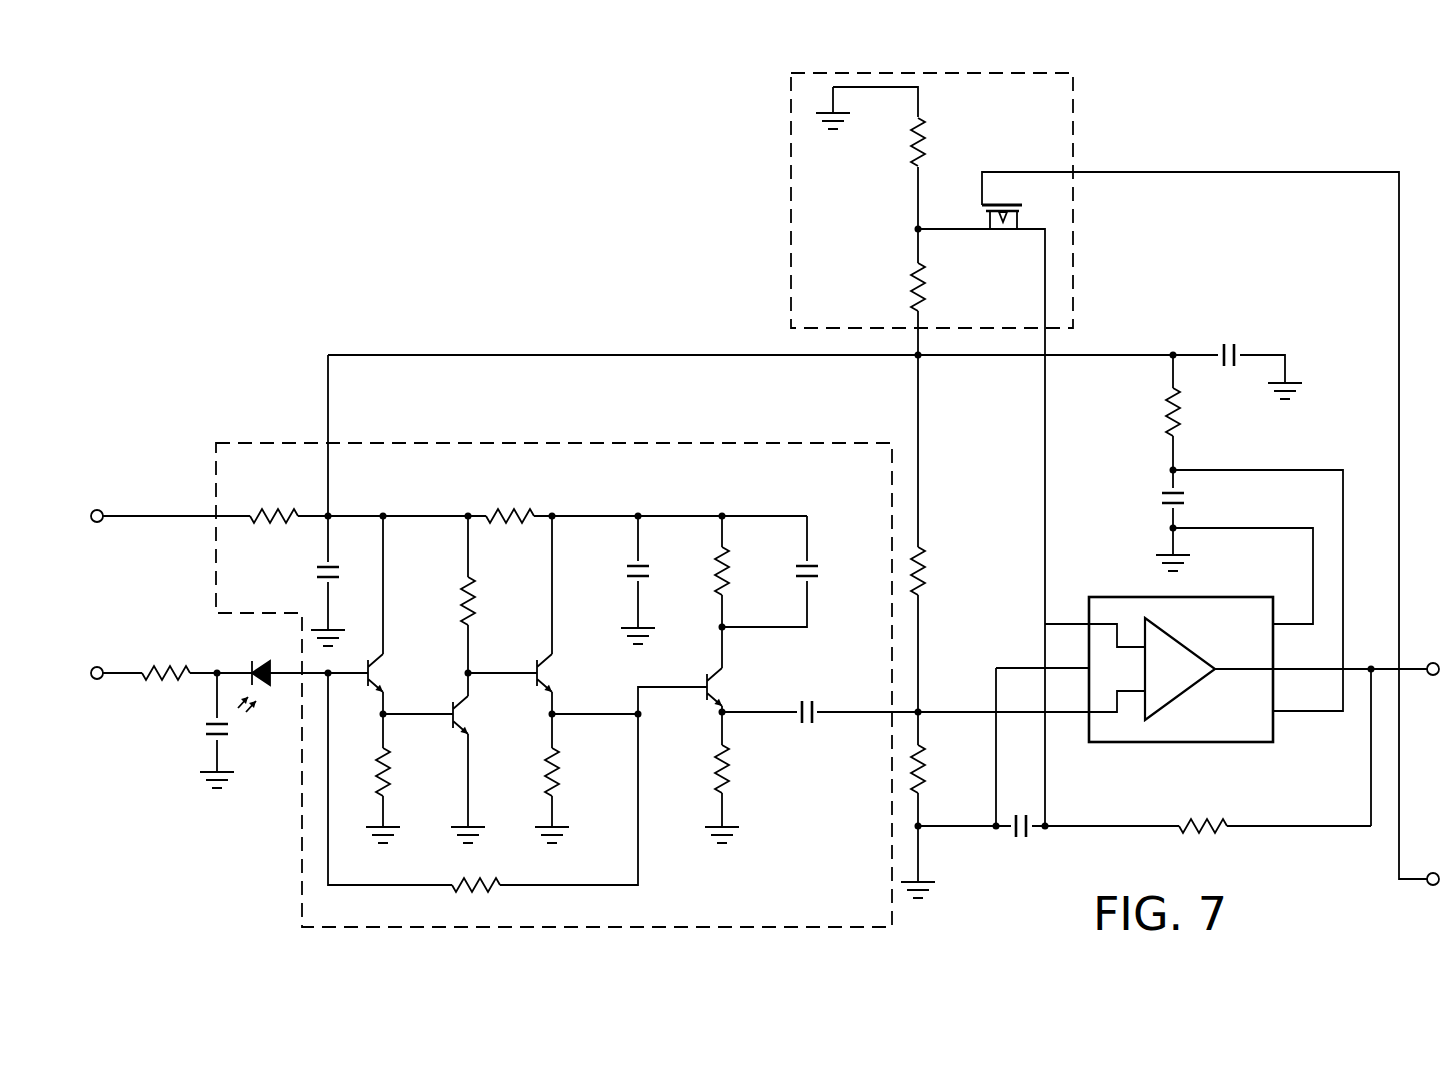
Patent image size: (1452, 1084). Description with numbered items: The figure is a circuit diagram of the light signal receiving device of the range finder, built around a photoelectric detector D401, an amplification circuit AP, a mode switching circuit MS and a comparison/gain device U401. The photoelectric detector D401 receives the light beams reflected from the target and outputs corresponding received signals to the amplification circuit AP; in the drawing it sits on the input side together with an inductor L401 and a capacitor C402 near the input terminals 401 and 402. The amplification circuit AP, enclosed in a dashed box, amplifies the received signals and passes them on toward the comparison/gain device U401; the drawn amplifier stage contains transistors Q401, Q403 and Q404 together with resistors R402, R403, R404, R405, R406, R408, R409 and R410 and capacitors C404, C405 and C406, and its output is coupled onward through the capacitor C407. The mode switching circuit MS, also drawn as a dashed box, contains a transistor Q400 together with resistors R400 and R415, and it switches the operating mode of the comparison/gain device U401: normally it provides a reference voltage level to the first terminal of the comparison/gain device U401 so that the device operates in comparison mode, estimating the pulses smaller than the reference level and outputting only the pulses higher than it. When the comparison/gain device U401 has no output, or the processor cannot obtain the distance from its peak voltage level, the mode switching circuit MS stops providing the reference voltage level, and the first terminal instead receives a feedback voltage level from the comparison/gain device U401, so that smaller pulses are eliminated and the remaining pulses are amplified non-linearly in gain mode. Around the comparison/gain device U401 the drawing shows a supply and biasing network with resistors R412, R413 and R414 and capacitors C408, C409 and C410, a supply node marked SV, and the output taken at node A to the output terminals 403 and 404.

The input terminal 401 is at (97, 501).
The input terminal 402 is at (97, 658).
The output terminal A 403 is at (1435, 682).
The output terminal 404 is at (1435, 865).
The output node A is at (1432, 644).
The amplification circuit AP is at (302, 853).
The mode switching circuit MS is at (790, 200).
The supply voltage node SV is at (1261, 453).
The comparison/gain device U401 is at (1173, 742).
The MOSFET transistor Q400 is at (1004, 218).
The transistor Q401 is at (409, 673).
The transistor Q403 is at (578, 673).
The transistor Q404 is at (620, 701).
The resistor R400 is at (949, 356).
The resistor R402 is at (271, 500).
The resistor R403 is at (414, 772).
The resistor R404 is at (499, 601).
The resistor R405 is at (477, 901).
The resistor R406 is at (509, 500).
The resistor R408 is at (583, 772).
The resistor R409 is at (753, 571).
The resistor R410 is at (753, 769).
The resistor R412 is at (950, 769).
The resistor R413 is at (1204, 412).
The resistor R414 is at (1202, 810).
The resistor R415 is at (949, 287).
The capacitor C402 is at (247, 729).
The capacitor C404 is at (298, 572).
The capacitor C405 is at (669, 570).
The capacitor C406 is at (837, 570).
The capacitor C407 is at (805, 726).
The capacitor C408 is at (1228, 342).
The capacitor C409 is at (1204, 497).
The capacitor C410 is at (1020, 839).
The inductor L401 is at (166, 658).
The photoelectric detector D401 is at (262, 670).